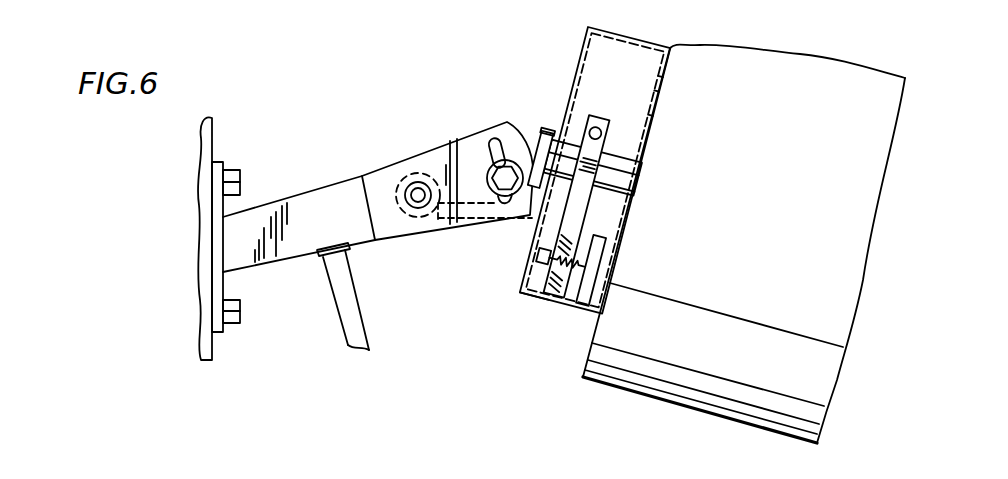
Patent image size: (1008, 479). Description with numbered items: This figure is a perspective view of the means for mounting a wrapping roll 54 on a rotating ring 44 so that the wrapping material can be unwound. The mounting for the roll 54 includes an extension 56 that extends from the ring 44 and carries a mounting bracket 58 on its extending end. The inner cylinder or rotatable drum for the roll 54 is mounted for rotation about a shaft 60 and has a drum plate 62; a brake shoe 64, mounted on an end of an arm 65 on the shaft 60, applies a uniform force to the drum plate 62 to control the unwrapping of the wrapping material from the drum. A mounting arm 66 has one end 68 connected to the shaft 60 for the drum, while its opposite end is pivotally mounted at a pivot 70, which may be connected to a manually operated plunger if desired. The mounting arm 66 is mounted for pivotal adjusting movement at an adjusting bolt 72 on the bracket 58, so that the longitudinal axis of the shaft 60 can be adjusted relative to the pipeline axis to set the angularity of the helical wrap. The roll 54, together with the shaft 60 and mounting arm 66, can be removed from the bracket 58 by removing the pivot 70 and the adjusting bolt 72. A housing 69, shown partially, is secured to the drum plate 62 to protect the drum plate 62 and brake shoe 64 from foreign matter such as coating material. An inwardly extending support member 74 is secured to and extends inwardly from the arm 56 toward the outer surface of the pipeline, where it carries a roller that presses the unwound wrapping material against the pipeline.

The ring 44 is at (196, 211).
The roll 54 is at (758, 278).
The extension 56 is at (305, 238).
The mounting bracket 58 is at (465, 147).
The shaft 60 is at (618, 165).
The drum plate 62 is at (652, 80).
The brake shoe 64 is at (573, 312).
The arm 65 is at (585, 208).
The mounting arm 66 is at (535, 130).
The end 68 is at (550, 127).
The housing 69 is at (520, 292).
The pivot 70 is at (413, 190).
The adjusting bolt 72 is at (493, 190).
The support member 74 is at (347, 346).